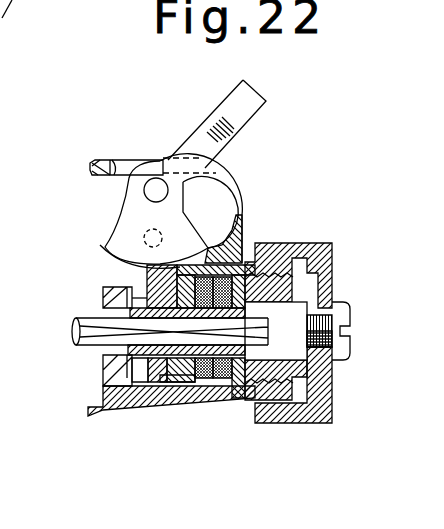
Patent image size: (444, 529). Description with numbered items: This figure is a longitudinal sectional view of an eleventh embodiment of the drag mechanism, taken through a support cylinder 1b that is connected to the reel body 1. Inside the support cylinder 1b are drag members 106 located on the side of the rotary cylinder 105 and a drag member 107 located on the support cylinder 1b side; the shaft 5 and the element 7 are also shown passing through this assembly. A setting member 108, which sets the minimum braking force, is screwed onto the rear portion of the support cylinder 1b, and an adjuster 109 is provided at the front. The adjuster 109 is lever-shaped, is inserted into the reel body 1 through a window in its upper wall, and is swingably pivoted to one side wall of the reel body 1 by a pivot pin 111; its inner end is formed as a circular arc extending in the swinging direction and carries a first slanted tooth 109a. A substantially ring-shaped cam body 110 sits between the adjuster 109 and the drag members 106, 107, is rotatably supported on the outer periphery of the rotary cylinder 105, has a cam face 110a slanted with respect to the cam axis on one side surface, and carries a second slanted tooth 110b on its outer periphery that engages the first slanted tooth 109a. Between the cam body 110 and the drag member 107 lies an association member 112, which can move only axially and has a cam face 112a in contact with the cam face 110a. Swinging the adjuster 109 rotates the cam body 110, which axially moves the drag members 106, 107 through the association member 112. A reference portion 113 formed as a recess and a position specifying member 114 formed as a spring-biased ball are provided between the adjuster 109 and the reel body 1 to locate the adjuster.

The reel body 1 is at (99, 158).
The support cylinder 1b is at (119, 160).
The shaft 5 is at (78, 324).
The spring 7 is at (206, 388).
The rotary cylinder 105 is at (131, 392).
The drag members 106 is at (239, 392).
The drag member 107 is at (226, 392).
The setting member 108 is at (334, 380).
The adjuster 109 is at (262, 92).
The first slanted tooth 109a is at (112, 243).
The cam body 110 is at (142, 280).
The cam face 110a is at (160, 386).
The second slanted tooth 110b is at (132, 262).
The pivot pin 111 is at (157, 186).
The association member 112 is at (175, 366).
The cam face 112a is at (152, 368).
The reference portion 113 is at (162, 240).
The position specifying member 114 is at (160, 236).